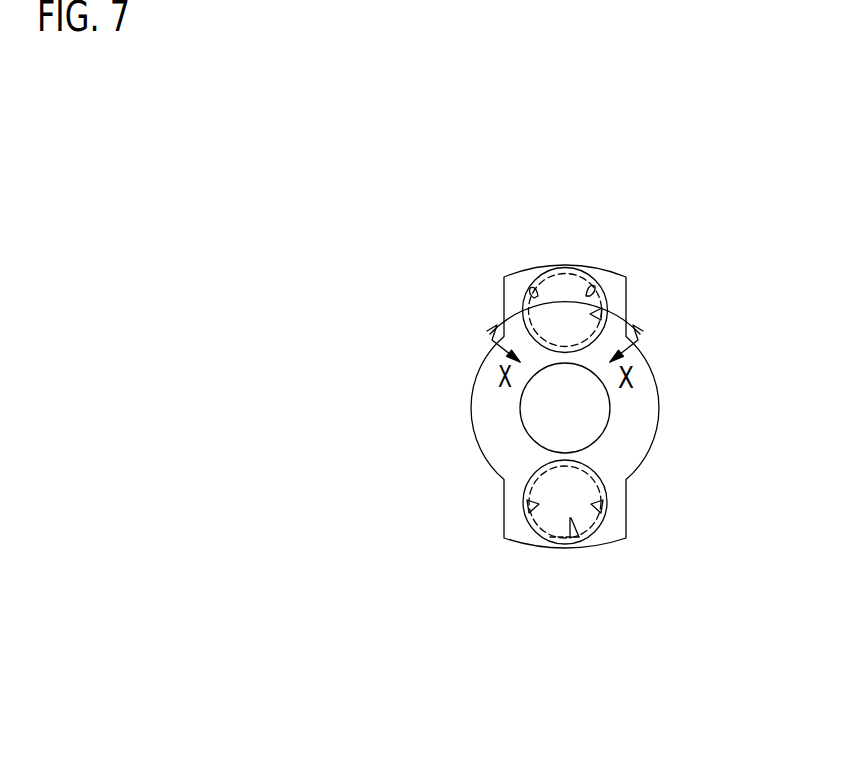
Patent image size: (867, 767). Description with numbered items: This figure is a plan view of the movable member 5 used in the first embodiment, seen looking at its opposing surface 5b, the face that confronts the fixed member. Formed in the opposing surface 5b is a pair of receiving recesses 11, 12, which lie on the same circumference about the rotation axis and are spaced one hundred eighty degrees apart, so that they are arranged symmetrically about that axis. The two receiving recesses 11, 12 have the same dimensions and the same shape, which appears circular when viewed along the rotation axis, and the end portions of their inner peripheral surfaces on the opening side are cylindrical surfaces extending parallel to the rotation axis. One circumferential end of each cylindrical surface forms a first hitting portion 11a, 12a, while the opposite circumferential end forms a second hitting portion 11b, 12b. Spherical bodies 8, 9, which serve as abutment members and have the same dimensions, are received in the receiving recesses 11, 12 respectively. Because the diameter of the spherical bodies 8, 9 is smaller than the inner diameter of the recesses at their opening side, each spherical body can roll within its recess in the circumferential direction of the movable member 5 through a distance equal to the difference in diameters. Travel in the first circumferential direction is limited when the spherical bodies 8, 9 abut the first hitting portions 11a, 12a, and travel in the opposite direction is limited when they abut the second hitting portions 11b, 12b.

The movable member 5 is at (658, 378).
The opposing surface 5b is at (638, 417).
The spherical body 8 is at (575, 277).
The spherical body 9 is at (553, 547).
The receiving recess 11 is at (588, 293).
The first hitting portion 11a is at (537, 293).
The second hitting portion 11b is at (596, 317).
The receiving recess 12 is at (573, 523).
The first hitting portion 12a is at (598, 517).
The second hitting portion 12b is at (530, 517).